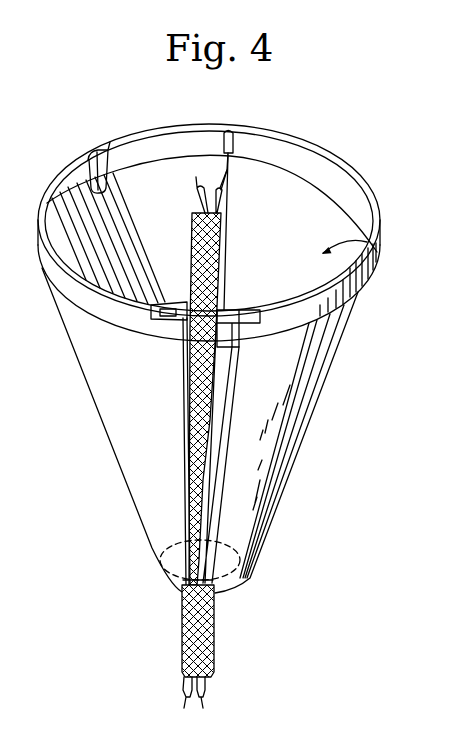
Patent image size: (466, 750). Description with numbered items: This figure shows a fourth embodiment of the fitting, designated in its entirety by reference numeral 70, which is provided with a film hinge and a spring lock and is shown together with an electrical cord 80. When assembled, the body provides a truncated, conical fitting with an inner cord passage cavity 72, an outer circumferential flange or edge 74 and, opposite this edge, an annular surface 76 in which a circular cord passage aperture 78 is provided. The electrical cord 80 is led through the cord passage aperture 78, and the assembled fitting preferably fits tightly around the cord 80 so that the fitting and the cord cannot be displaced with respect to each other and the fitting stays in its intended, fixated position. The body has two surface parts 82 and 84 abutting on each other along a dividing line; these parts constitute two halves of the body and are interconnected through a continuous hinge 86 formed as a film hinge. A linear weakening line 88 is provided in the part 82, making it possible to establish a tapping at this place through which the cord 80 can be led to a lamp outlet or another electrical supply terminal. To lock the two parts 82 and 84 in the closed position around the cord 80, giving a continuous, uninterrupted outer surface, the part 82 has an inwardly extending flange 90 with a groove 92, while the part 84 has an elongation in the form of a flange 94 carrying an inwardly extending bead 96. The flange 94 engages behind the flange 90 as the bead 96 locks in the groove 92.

The fitting 70 is at (332, 145).
The inner cord passage cavity 72 is at (372, 263).
The outer circumferential flange 74 is at (80, 296).
The annular surface 76 is at (168, 585).
The cord passage aperture 78 is at (238, 584).
The electrical cord 80 is at (215, 643).
The surface part 82 is at (177, 440).
The surface part 84 is at (237, 447).
The continuous hinge 86 is at (232, 137).
The linear weakening line 88 is at (97, 157).
The inwardly extending flange 90 is at (160, 303).
The groove 92 is at (172, 308).
The flange 94 is at (240, 337).
The inwardly extending bead 96 is at (228, 312).